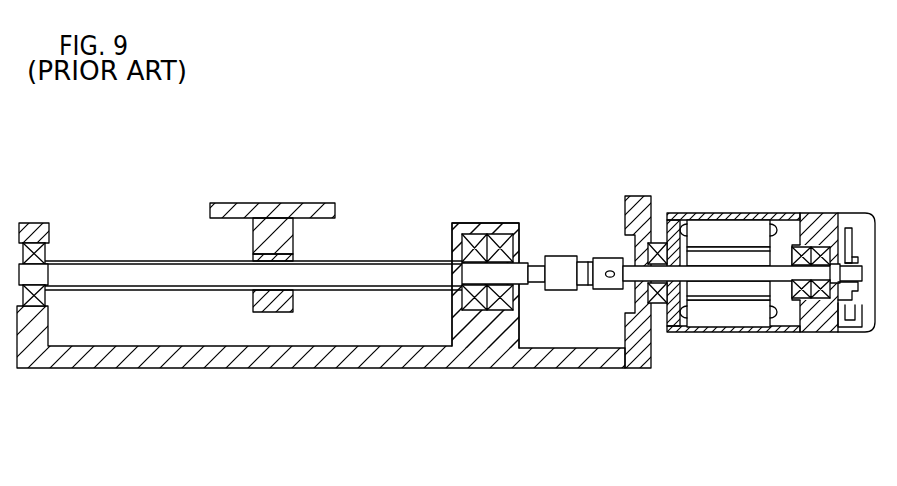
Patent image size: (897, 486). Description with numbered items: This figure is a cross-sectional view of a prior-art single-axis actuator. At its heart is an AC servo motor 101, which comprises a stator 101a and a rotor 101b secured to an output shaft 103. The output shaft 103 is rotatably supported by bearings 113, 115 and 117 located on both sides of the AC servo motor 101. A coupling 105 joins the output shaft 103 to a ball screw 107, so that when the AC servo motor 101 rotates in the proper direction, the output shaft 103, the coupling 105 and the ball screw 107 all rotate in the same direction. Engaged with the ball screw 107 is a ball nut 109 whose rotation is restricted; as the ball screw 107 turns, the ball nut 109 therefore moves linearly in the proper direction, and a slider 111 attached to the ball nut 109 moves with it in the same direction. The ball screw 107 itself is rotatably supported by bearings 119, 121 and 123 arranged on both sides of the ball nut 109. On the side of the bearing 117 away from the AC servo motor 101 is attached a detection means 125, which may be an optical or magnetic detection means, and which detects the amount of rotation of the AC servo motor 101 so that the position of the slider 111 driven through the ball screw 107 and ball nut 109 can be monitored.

The AC servo motor 101 is at (728, 333).
The stator 101a is at (693, 325).
The rotor 101b is at (723, 258).
The output shaft 103 is at (637, 278).
The coupling 105 is at (573, 296).
The ball screw 107 is at (377, 290).
The ball nut 109 is at (263, 312).
The slider 111 is at (283, 203).
The bearing 113 is at (663, 255).
The bearing 115 is at (802, 300).
The bearing 117 is at (820, 298).
The bearing 119 is at (46, 258).
The bearing 121 is at (480, 223).
The bearing 123 is at (512, 240).
The detection means 125 is at (848, 227).